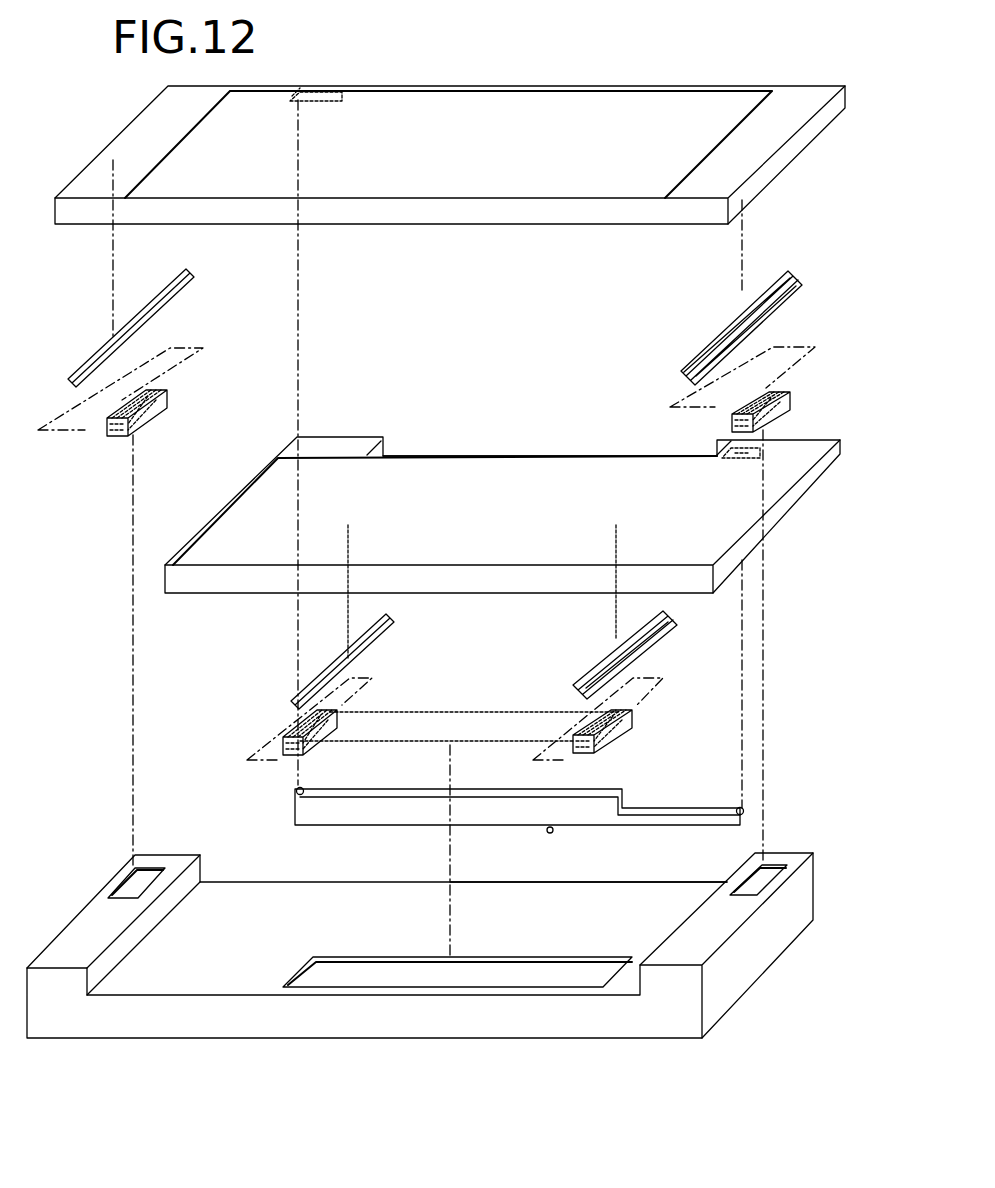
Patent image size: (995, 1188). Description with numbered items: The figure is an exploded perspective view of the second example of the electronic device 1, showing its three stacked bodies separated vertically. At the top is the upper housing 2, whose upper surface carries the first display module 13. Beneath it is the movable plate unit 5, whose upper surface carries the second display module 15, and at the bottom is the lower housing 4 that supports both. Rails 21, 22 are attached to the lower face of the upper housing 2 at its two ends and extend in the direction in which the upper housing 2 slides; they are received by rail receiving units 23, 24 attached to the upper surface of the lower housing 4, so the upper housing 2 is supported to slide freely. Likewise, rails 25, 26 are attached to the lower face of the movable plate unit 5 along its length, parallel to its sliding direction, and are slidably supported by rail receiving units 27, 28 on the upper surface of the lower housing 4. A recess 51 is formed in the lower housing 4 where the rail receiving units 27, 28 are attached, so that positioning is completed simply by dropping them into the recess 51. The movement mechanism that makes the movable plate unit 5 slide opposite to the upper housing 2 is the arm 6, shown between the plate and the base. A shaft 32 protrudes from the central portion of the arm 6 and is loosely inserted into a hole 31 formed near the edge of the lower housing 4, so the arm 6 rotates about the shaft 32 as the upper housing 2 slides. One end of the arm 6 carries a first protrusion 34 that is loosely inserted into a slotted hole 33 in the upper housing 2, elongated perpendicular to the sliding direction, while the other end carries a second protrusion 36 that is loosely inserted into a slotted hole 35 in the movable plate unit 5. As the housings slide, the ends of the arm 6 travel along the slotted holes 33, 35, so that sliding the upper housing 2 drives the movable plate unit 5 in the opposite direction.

The electronic device 1 is at (479, 74).
The upper housing 2 is at (847, 97).
The lower housing 4 is at (816, 883).
The movable plate unit 5 is at (844, 446).
The arm 6 is at (295, 816).
The first display module 13 is at (638, 90).
The second display module 15 is at (514, 460).
The rail 21 is at (100, 356).
The rail 22 is at (790, 272).
The rail receiving unit 23 is at (118, 437).
The rail receiving unit 24 is at (786, 398).
The rail 25 is at (374, 642).
The rail 26 is at (598, 666).
The rail receiving unit 27 is at (296, 760).
The rail receiving unit 28 is at (622, 732).
The hole 31 is at (548, 881).
The shaft 32 is at (553, 832).
The slotted hole 33 is at (323, 88).
The first protrusion 34 is at (304, 790).
The slotted hole 35 is at (722, 453).
The second protrusion 36 is at (736, 808).
The recess 51 is at (410, 962).